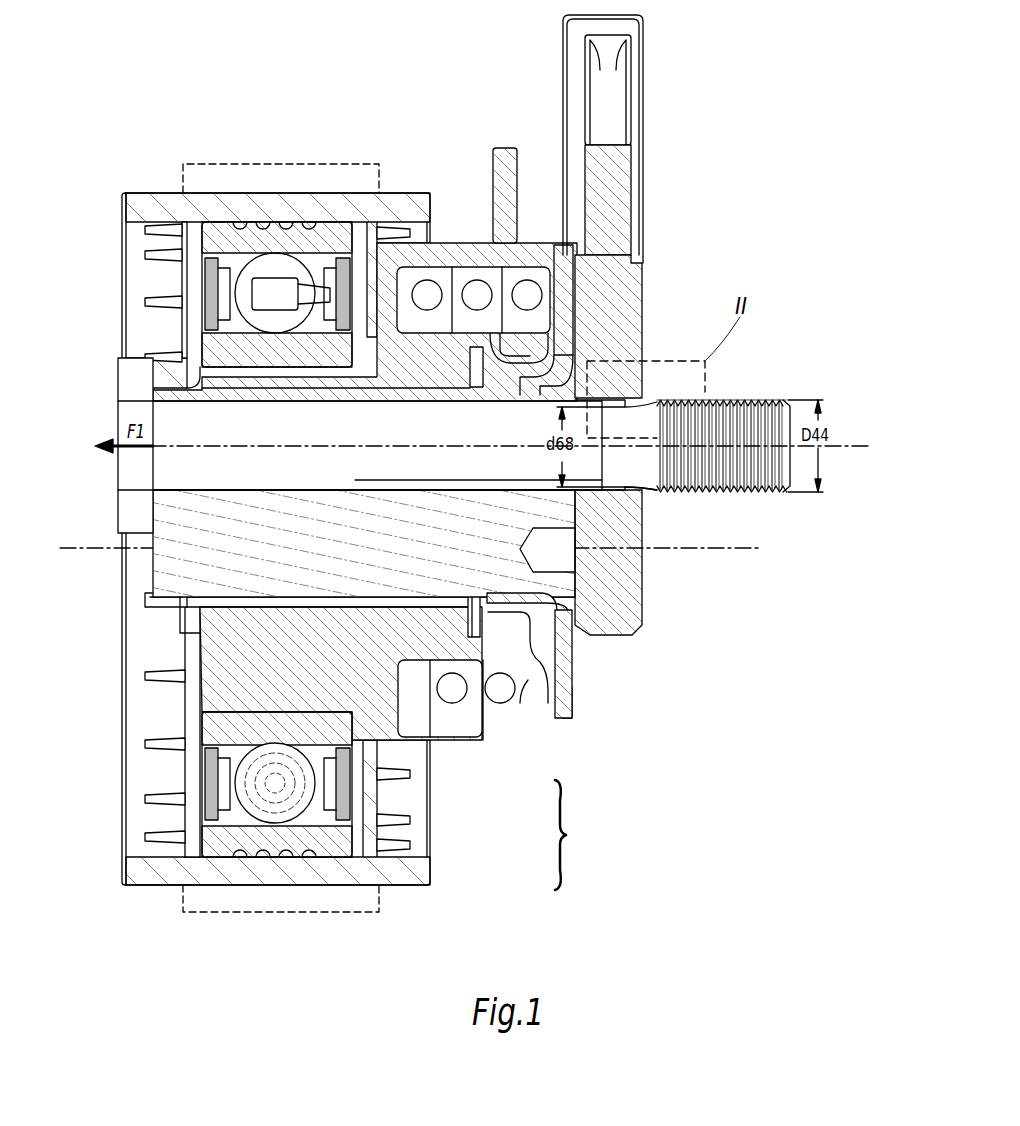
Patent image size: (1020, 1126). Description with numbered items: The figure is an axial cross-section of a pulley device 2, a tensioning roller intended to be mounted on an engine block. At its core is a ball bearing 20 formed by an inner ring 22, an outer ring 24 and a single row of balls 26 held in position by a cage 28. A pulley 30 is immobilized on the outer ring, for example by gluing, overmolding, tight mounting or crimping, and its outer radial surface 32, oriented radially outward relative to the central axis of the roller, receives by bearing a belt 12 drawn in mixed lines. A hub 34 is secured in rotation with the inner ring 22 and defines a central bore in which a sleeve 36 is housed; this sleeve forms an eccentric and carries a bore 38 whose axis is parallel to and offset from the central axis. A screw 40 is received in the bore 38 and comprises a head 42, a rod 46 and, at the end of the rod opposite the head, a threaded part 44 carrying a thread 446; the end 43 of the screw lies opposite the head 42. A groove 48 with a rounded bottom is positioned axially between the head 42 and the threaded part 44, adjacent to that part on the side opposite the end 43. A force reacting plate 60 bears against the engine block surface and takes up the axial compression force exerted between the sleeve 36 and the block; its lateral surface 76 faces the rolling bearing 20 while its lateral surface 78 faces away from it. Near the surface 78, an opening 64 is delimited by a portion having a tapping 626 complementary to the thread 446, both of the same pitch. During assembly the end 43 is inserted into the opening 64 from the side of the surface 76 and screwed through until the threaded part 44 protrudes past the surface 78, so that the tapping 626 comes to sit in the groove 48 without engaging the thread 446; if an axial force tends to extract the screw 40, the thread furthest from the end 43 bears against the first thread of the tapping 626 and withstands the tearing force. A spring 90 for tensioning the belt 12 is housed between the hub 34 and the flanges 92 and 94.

The pulley device 2 is at (104, 160).
The belt 12 is at (300, 178).
The ball bearing 20 is at (510, 520).
The inner ring 22 is at (378, 722).
The outer ring 24 is at (340, 857).
The balls 26 is at (293, 786).
The cage 28 is at (353, 813).
The pulley 30 is at (510, 483).
The outer radial surface of the pulley 32 is at (150, 192).
The hub 34 is at (228, 646).
The sleeve 36 is at (177, 573).
The bore 38 is at (183, 489).
The screw 40 is at (213, 419).
The head 42 is at (135, 413).
The end of the screw 43 is at (789, 412).
The threaded part 44 is at (744, 412).
The rod 46 is at (355, 480).
The groove 48 is at (655, 489).
The force reacting plate 60 is at (620, 176).
The opening 64 is at (620, 537).
The lateral surface of the plate 76 is at (557, 607).
The lateral surface of the plate 78 is at (646, 607).
The spring 90 is at (477, 280).
The flange 92 is at (548, 688).
The flange 94 is at (556, 250).
The thread 446 is at (742, 401).
The tapping 626 is at (633, 404).